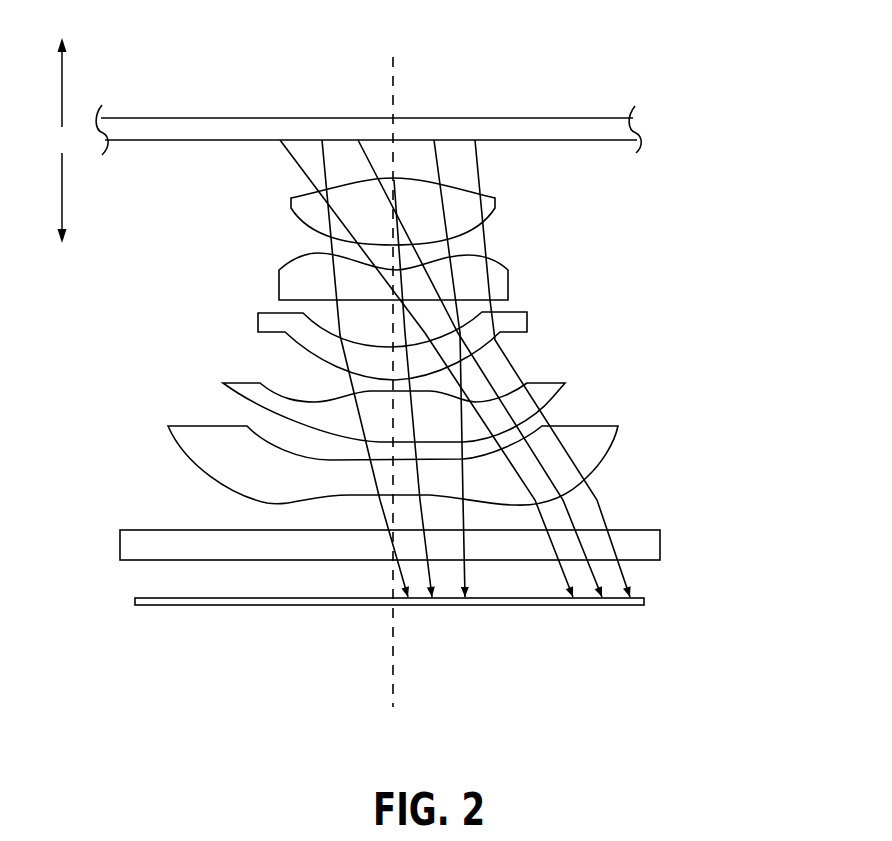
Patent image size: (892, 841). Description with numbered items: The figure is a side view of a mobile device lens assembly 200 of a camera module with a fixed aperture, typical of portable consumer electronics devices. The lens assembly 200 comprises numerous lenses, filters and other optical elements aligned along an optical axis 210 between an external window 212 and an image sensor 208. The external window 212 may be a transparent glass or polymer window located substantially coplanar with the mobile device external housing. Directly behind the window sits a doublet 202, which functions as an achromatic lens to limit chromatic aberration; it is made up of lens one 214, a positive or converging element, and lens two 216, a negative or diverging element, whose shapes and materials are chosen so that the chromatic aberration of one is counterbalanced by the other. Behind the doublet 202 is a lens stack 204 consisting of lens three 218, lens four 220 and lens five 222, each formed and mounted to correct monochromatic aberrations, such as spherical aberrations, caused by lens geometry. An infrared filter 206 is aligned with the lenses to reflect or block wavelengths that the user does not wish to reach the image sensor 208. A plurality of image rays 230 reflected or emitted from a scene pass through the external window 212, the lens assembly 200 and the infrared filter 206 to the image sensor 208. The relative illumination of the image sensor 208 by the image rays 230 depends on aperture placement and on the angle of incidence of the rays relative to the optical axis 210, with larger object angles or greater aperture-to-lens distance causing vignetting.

The mobile device lens assembly 200 is at (745, 171).
The doublet 202 is at (237, 183).
The lens stack 204 is at (160, 303).
The infrared filter 206 is at (172, 563).
The image sensor 208 is at (530, 605).
The optical axis 210 is at (394, 77).
The external window 212 is at (515, 116).
The lens one 214 is at (500, 222).
The lens two 216 is at (512, 287).
The lens three 218 is at (530, 322).
The lens four 220 is at (555, 399).
The lens five 222 is at (612, 444).
The image rays 230 is at (605, 519).